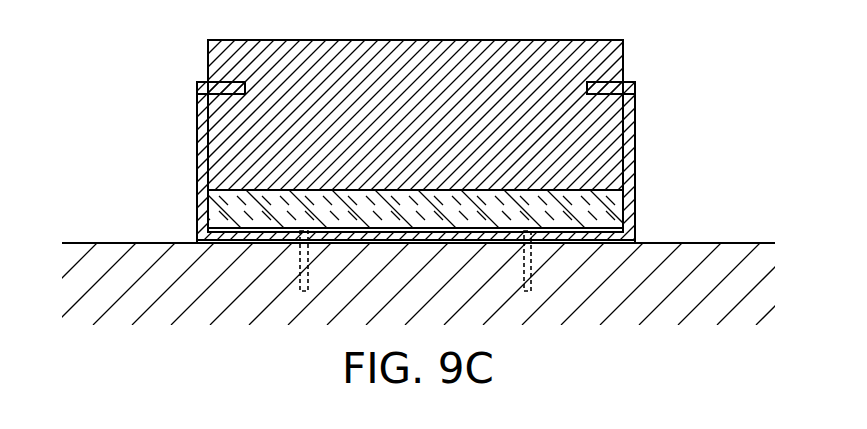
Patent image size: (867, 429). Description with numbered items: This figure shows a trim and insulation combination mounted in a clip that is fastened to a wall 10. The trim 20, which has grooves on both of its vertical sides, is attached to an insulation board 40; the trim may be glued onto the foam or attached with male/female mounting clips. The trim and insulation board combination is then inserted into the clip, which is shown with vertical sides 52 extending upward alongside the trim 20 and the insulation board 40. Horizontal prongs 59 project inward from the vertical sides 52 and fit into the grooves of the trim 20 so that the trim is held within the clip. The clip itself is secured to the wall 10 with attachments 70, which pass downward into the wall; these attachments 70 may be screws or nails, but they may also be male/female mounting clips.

The wall 10 is at (732, 243).
The trim 20 is at (560, 53).
The insulation board 40 is at (594, 207).
The vertical sides 52 is at (636, 132).
The horizontal prong 59 is at (610, 90).
The attachments 70 is at (531, 268).